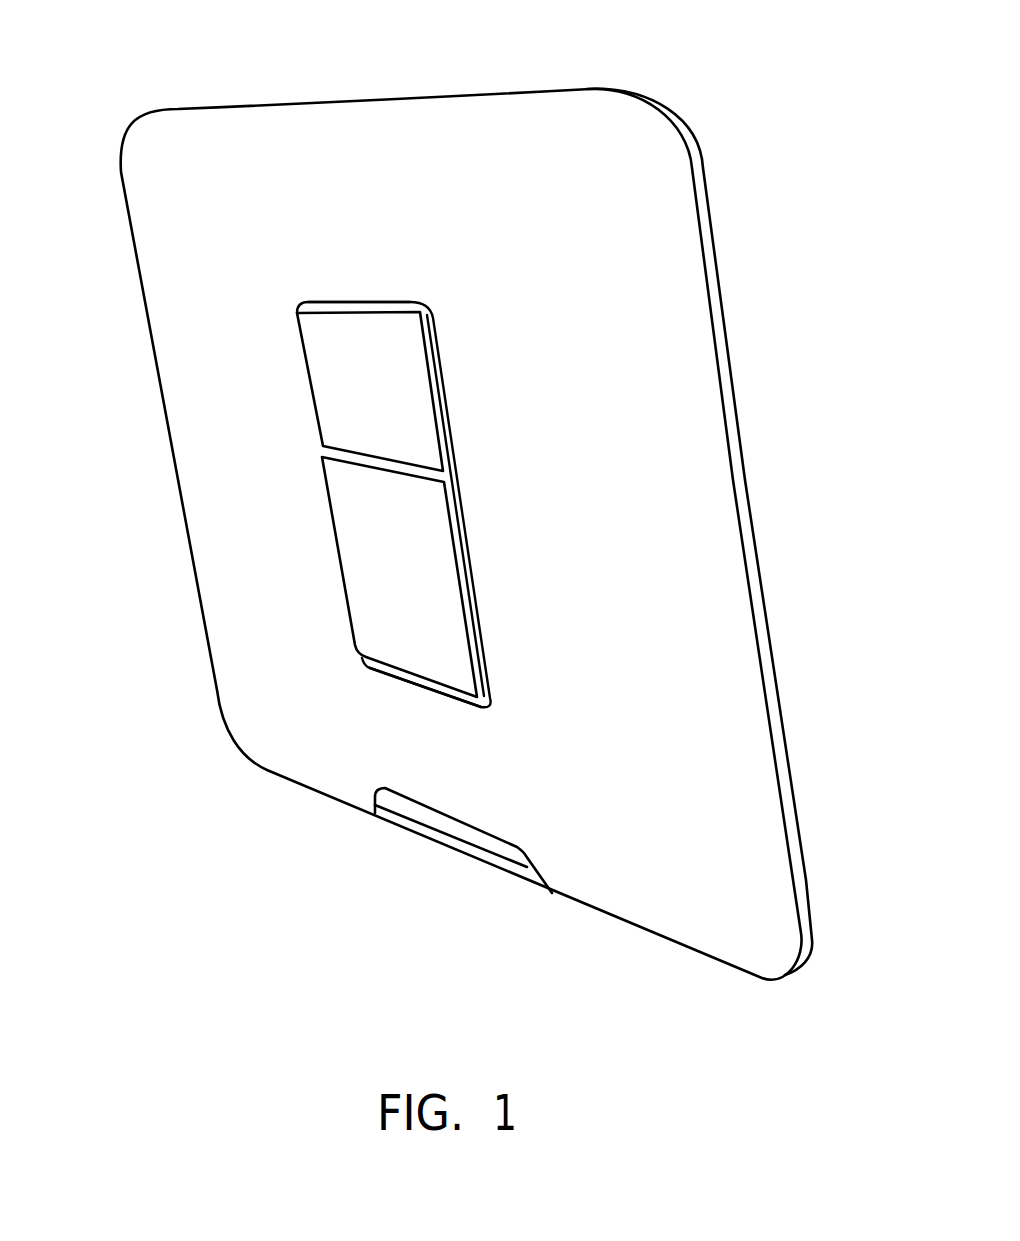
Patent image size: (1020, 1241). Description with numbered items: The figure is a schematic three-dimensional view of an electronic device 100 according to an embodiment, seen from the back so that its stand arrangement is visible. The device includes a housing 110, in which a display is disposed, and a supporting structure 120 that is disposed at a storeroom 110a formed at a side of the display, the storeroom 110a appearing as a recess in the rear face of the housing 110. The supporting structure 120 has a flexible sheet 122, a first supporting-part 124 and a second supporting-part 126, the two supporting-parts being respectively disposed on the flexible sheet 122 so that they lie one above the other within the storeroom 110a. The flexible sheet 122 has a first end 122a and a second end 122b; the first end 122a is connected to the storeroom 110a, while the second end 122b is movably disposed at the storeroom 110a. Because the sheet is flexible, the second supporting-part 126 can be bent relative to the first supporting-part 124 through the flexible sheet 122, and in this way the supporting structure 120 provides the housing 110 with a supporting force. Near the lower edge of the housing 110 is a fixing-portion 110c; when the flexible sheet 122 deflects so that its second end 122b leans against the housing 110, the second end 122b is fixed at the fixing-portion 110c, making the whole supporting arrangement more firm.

The electronic device 100 is at (885, 1073).
The housing 110 is at (477, 494).
The storeroom 110a is at (349, 326).
The fixing-portion 110c is at (430, 833).
The supporting structure 120 is at (452, 504).
The flexible sheet 122 is at (380, 468).
The first end 122a is at (391, 683).
The second end 122b is at (376, 300).
The first supporting-part 124 is at (357, 513).
The second supporting-part 126 is at (338, 378).